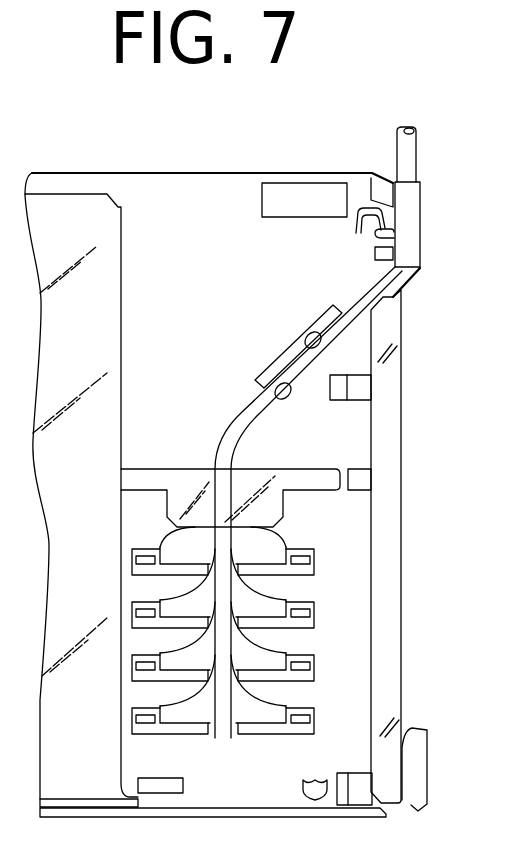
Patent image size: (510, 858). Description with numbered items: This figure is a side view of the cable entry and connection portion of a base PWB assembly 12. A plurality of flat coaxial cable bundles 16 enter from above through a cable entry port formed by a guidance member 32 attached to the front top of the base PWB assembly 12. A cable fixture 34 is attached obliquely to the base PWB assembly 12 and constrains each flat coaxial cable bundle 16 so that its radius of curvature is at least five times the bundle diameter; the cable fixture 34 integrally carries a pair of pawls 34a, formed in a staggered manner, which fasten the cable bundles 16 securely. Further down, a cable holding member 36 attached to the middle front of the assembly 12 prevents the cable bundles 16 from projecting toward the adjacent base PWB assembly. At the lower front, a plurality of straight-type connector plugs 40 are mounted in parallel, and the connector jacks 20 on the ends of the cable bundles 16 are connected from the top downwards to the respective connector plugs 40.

The base PWB assembly 12 is at (378, 513).
The flat coaxial cable bundle 16 is at (403, 150).
The connector jack 20 is at (172, 547).
The guidance member 32 is at (409, 192).
The cable fixture 34 is at (286, 364).
The pawl 34a is at (314, 333).
The cable holding member 36 is at (197, 480).
The connector plug 40 is at (134, 573).